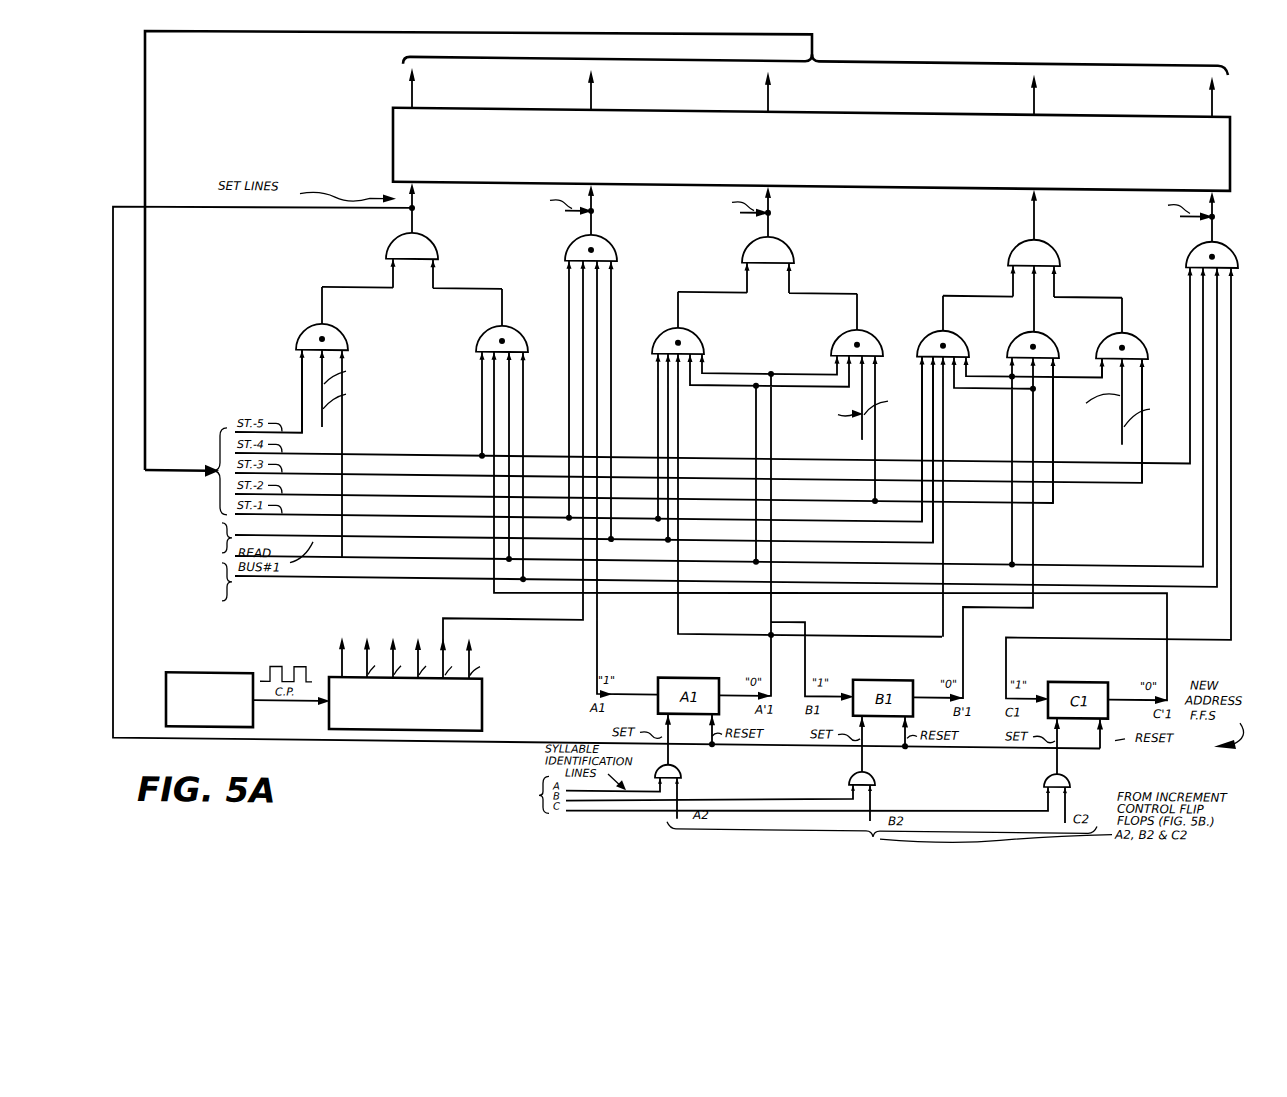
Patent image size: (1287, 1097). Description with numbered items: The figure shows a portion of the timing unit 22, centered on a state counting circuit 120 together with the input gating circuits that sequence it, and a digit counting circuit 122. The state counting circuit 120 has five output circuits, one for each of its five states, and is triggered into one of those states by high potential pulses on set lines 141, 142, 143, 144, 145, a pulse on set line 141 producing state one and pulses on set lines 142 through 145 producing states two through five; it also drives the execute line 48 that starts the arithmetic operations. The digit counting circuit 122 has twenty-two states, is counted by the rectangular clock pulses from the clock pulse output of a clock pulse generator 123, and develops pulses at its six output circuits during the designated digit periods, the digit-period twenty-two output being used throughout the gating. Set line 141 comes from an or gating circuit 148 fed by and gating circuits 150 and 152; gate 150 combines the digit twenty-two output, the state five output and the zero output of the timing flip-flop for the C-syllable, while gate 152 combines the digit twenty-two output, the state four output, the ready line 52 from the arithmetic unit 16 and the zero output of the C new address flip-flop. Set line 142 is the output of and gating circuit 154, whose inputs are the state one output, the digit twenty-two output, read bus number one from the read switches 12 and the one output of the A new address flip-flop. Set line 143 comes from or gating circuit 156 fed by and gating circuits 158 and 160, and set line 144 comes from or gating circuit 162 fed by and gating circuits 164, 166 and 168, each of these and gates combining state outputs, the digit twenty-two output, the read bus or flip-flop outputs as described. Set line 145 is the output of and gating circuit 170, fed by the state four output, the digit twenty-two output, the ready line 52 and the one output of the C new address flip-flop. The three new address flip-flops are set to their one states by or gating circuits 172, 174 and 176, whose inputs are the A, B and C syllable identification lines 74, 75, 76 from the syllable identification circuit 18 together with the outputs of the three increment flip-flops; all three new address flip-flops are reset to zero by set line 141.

The timing unit 22 is at (334, 101).
The state counting circuit 120 is at (811, 129).
The digit counting circuit 122 is at (330, 680).
The clock pulse generator 123 is at (206, 678).
The execute line 48 is at (1034, 92).
The ready line 52 is at (253, 584).
The read switches 12 is at (175, 537).
The arithmetic unit 16 is at (174, 581).
The syllable identification circuit 18 is at (453, 793).
The A-syllable identification line 74 is at (650, 792).
The B-syllable identification line 75 is at (616, 801).
The C-syllable identification line 76 is at (584, 810).
The set line 141 is at (414, 219).
The set line 142 is at (593, 219).
The set line 143 is at (776, 217).
The set line 144 is at (1032, 219).
The set line 145 is at (1214, 221).
The or gating circuit 148 is at (433, 244).
The and gating circuit 150 is at (342, 330).
The and gating circuit 152 is at (481, 331).
The and gating circuit 154 is at (612, 244).
The or gating circuit 156 is at (791, 244).
The and gating circuit 158 is at (690, 330).
The and gating circuit 160 is at (836, 331).
The or gating circuit 162 is at (1011, 250).
The and gating circuit 164 is at (926, 330).
The and gating circuit 166 is at (1016, 330).
The and gating circuit 168 is at (1106, 330).
The and gating circuit 170 is at (1188, 250).
The or gating circuit 172 is at (681, 765).
The or gating circuit 174 is at (876, 770).
The or gating circuit 176 is at (1071, 768).